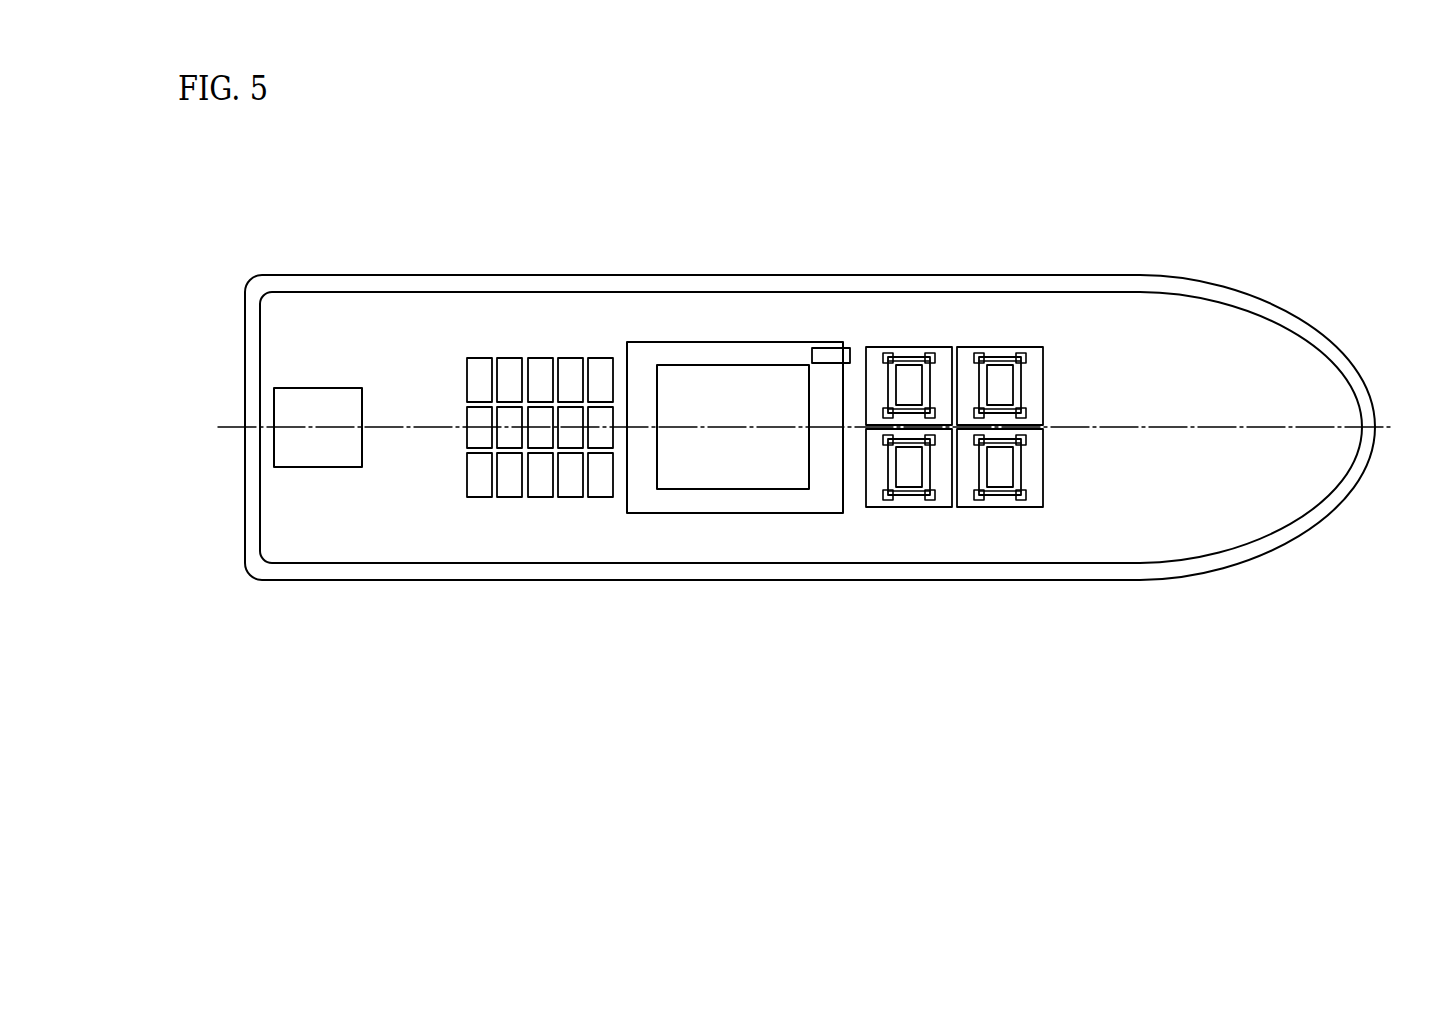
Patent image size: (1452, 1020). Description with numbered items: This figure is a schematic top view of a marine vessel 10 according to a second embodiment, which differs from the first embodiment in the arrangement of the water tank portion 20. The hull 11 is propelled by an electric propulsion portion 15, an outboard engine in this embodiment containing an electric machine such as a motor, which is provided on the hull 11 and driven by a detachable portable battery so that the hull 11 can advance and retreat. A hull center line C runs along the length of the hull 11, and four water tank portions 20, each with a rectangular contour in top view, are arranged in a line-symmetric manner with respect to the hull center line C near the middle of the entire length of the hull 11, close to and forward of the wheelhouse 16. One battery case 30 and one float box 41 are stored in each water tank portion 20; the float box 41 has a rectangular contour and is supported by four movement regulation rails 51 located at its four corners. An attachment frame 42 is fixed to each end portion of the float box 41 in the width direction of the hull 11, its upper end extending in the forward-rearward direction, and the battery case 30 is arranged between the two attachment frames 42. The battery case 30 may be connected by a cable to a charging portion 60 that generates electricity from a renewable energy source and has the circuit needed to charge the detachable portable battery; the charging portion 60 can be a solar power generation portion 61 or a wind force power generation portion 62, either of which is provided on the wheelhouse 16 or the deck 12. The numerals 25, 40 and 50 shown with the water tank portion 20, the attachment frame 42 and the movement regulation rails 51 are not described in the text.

The marine vessel 10 is at (300, 184).
The hull 11 is at (1260, 310).
The deck 12 is at (1227, 512).
The electric propulsion portion 15 is at (315, 467).
The wheelhouse 16 is at (687, 513).
The water tank portion 20 is at (938, 440).
The sensor unit 25 is at (868, 347).
The battery case 30 is at (540, 358).
The frame 40 is at (903, 408).
The float box 41 is at (907, 495).
The attachment frame 42 is at (900, 357).
The connection portion 50 is at (922, 327).
The movement regulation rail 51 is at (887, 352).
The charging portion 60 is at (742, 352).
The solar power generation portion 61 is at (692, 365).
The wind force power generation portion 62 is at (820, 348).
The hull center line C is at (225, 428).